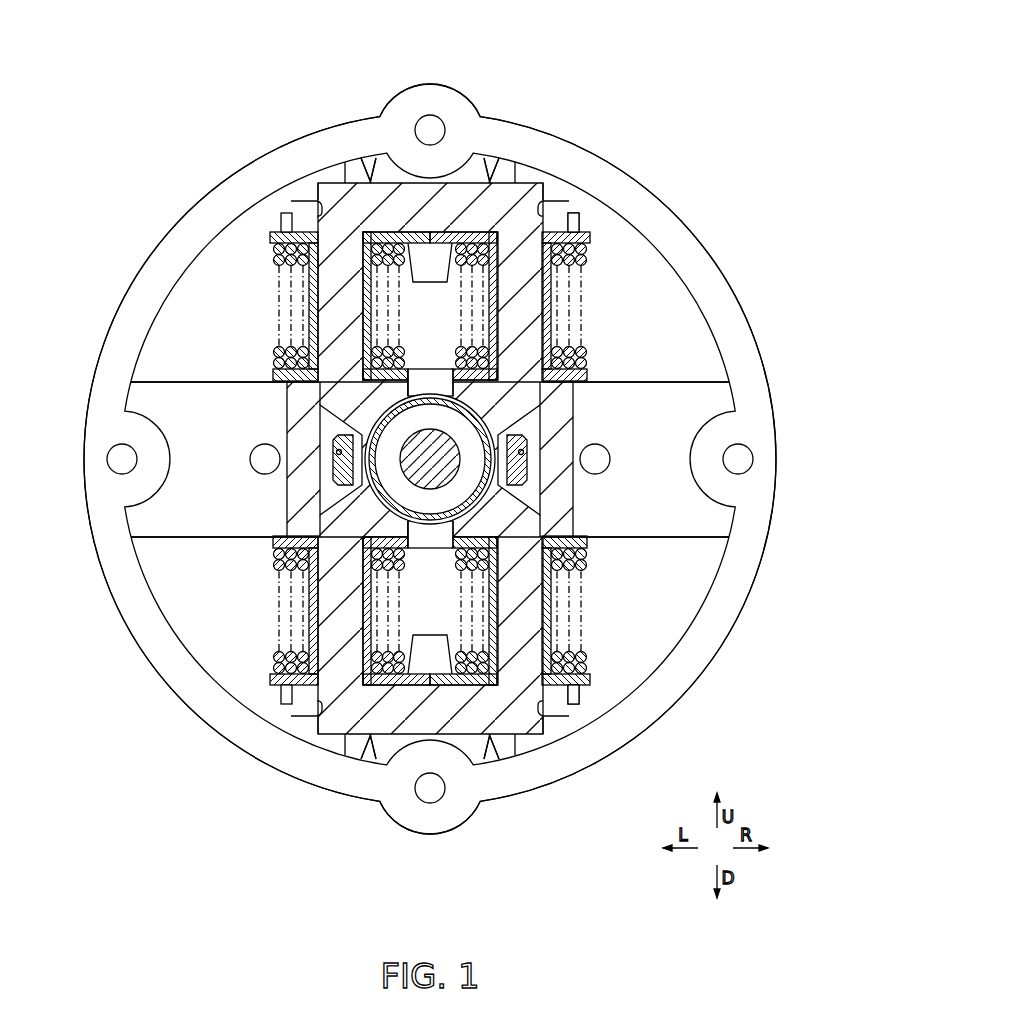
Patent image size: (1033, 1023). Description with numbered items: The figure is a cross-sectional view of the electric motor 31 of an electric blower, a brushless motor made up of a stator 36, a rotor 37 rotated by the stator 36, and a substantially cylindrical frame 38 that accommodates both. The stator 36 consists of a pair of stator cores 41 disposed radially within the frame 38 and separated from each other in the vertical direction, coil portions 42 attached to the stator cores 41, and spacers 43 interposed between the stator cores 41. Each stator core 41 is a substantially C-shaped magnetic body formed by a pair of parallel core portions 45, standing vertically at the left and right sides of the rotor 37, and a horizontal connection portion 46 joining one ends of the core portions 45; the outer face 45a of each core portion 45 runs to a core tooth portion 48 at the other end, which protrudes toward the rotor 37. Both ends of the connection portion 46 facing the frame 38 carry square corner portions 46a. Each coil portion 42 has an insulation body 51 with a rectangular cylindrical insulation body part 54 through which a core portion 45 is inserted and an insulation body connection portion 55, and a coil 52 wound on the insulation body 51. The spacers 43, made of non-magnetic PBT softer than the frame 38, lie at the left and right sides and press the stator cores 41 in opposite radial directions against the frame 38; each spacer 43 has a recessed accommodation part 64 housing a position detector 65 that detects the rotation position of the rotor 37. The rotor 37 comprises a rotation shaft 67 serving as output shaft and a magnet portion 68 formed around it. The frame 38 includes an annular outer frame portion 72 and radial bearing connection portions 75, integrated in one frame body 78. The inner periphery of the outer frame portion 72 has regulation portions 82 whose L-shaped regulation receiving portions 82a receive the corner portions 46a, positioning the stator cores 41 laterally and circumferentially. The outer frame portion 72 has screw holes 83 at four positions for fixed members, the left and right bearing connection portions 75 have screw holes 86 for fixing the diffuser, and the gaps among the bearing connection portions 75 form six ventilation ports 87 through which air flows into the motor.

The electric motor 31 is at (480, 70).
The stator 36 is at (538, 178).
The rotor 37 is at (562, 356).
The frame 38 is at (714, 260).
The stator core 41 is at (560, 288).
The coil portion 42 is at (586, 218).
The spacer 43 is at (322, 428).
The core portion 45 is at (325, 318).
The outer face of the core portion 45a is at (325, 335).
The connection portion 46 is at (322, 160).
The corner portion 46a is at (318, 190).
The core tooth portion 48 is at (302, 404).
The insulation body 51 is at (281, 225).
The coil 52 is at (272, 236).
The insulation body part 54 is at (276, 376).
The insulation body connection portion 55 is at (380, 230).
The accommodation part 64 is at (335, 446).
The position detector 65 is at (338, 470).
The rotation shaft 67 is at (436, 412).
The magnet portion 68 is at (432, 490).
The outer frame portion 72 is at (442, 459).
The bearing connection portion 75 is at (358, 168).
The frame body 78 is at (760, 347).
The regulation portion 82 is at (342, 165).
The regulation receiving portion 82a is at (320, 206).
The screw hole 83 is at (430, 114).
The screw hole 86 is at (250, 459).
The ventilation port 87 is at (190, 313).